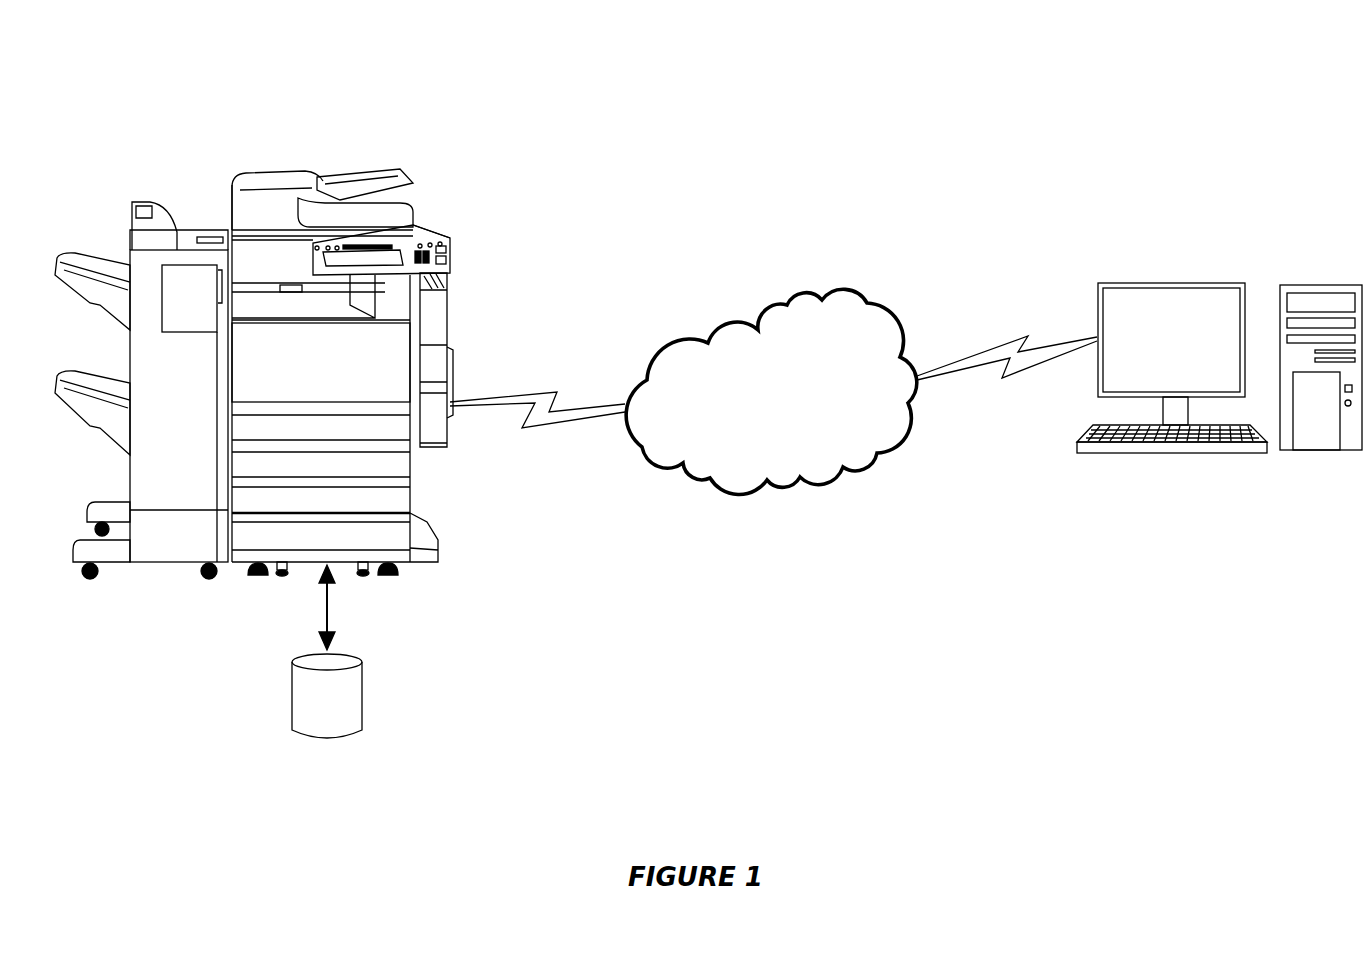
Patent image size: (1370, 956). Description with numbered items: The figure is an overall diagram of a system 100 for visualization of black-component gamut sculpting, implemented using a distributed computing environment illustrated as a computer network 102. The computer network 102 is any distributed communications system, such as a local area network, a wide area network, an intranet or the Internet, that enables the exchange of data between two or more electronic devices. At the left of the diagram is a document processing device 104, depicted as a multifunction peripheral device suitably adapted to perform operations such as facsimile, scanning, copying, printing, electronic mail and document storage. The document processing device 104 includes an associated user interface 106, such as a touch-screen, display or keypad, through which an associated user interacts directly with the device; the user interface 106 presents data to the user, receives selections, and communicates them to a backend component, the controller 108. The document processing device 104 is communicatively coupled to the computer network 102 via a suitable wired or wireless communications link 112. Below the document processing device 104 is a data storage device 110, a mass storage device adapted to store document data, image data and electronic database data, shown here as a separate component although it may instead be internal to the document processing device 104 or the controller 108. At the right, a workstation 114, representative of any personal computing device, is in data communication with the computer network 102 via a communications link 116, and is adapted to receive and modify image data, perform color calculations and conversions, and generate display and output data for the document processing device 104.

The system 100 is at (974, 170).
The computer network 102 is at (843, 273).
The document processing device 104 is at (271, 175).
The user interface 106 is at (452, 253).
The controller 108 is at (413, 348).
The data storage device 110 is at (360, 662).
The communications link 112 is at (585, 368).
The workstation 114 is at (1182, 280).
The communications link 116 is at (1025, 337).